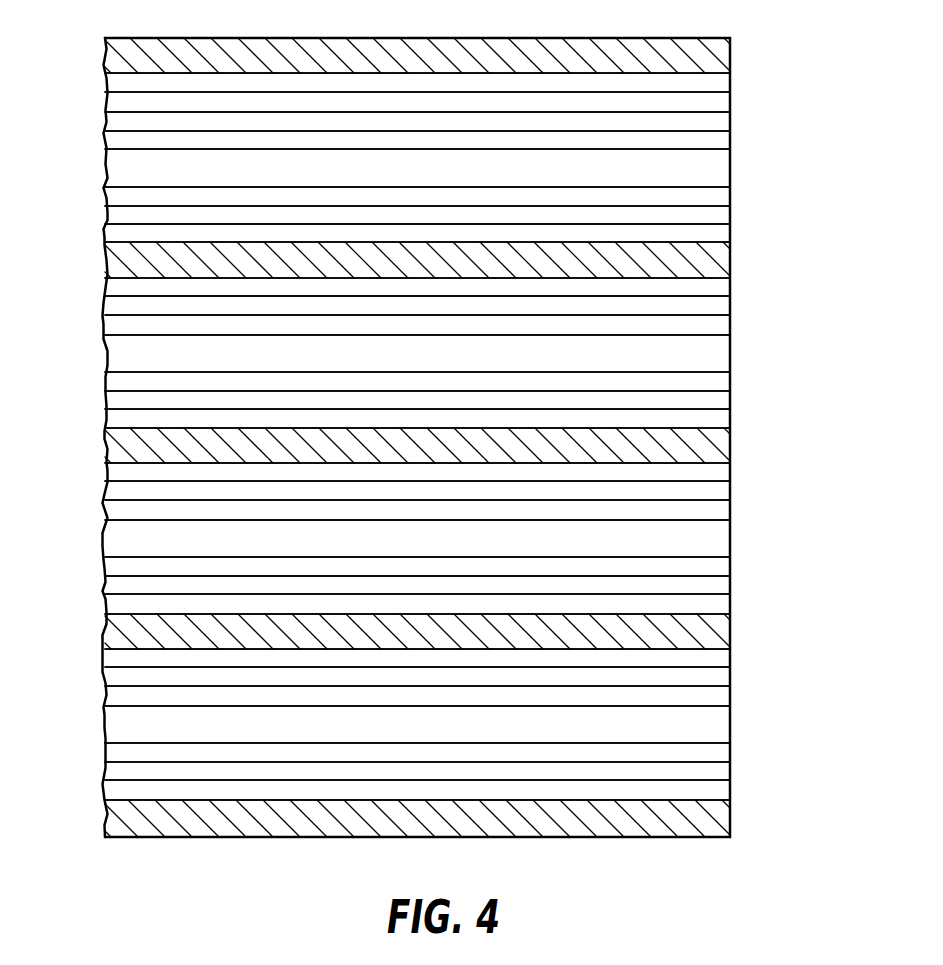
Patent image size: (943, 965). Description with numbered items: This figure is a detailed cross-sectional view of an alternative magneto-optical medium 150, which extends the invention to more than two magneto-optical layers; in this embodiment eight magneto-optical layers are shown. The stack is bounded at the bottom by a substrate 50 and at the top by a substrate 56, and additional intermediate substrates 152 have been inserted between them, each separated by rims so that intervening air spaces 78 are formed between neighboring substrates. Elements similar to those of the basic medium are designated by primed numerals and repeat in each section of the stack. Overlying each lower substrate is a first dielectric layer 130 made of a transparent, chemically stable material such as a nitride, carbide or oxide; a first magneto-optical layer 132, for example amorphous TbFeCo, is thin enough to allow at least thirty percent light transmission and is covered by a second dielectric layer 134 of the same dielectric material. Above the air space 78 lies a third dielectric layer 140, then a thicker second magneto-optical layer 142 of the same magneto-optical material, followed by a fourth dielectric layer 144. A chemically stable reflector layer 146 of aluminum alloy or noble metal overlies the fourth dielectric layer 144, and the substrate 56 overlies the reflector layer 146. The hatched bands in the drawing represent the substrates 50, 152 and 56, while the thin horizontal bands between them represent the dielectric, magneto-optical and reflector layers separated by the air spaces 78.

The medium 150 is at (209, 864).
The substrate 56 is at (85, 48).
The substrate 50 is at (83, 809).
The intermediate substrate 152 is at (105, 642).
The reflector layer 146 is at (853, 29).
The fourth dielectric layer 144 is at (813, 633).
The second magneto-optical layer 142 is at (858, 658).
The third dielectric layer 140 is at (878, 691).
The air space 78 is at (91, 714).
The second dielectric layer 134 is at (815, 731).
The first magneto-optical layer 132 is at (842, 758).
The first dielectric layer 130 is at (870, 786).